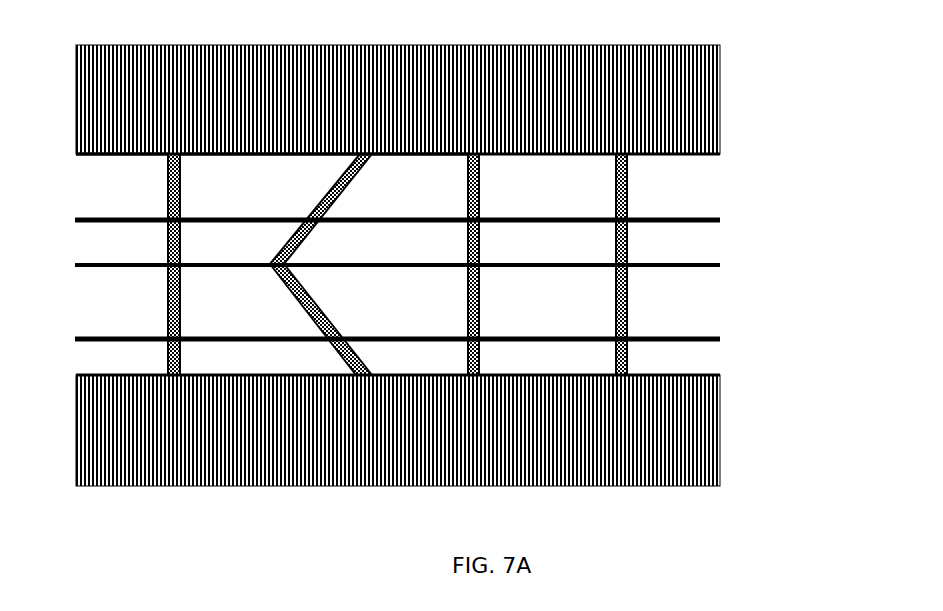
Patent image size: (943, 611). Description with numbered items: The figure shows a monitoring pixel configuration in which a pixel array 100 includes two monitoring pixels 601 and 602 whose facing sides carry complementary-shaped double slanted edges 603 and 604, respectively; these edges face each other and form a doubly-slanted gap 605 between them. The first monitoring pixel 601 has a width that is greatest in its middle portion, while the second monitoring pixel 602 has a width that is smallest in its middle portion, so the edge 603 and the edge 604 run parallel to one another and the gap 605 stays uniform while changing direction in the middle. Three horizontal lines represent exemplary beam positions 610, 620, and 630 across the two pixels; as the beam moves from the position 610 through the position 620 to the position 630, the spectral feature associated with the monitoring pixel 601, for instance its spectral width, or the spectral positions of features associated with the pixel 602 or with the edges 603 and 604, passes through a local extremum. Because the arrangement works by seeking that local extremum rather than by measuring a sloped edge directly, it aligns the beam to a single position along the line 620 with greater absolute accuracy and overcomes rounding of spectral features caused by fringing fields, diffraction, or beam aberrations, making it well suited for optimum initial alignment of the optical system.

The substrate 100 is at (533, 152).
The monitoring pixel 601 is at (403, 152).
The monitoring pixel 602 is at (283, 152).
The double slanted edge 603 is at (329, 193).
The double slanted edge 604 is at (343, 190).
The doubly-slanted gap 605 is at (368, 376).
The beam position 610 is at (718, 219).
The beam position 620 is at (700, 272).
The beam position 630 is at (697, 343).